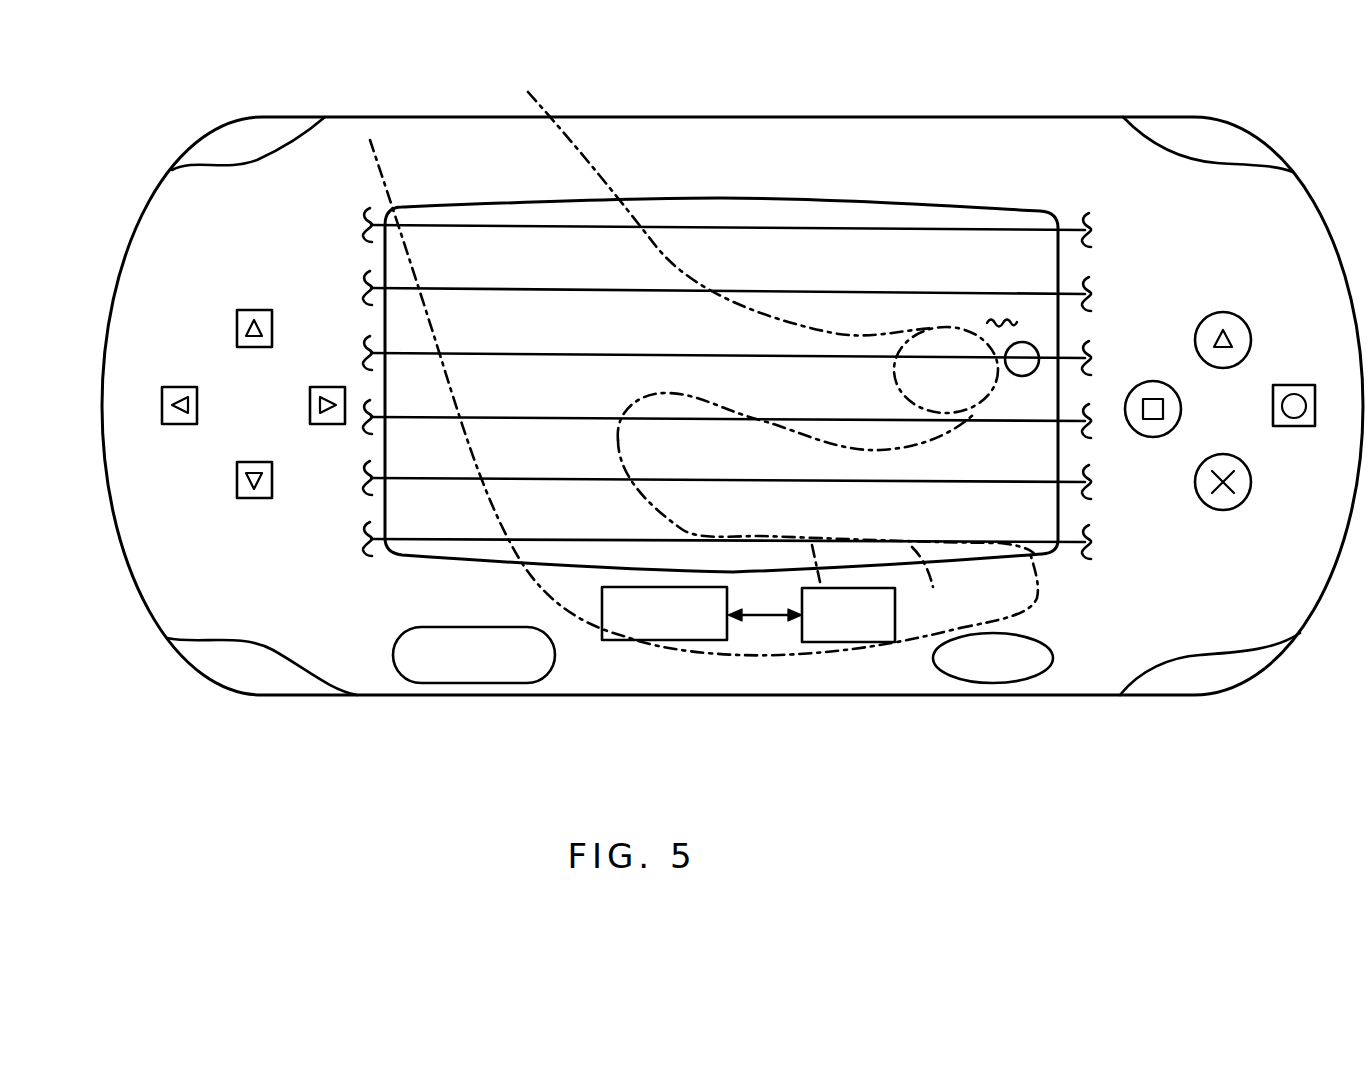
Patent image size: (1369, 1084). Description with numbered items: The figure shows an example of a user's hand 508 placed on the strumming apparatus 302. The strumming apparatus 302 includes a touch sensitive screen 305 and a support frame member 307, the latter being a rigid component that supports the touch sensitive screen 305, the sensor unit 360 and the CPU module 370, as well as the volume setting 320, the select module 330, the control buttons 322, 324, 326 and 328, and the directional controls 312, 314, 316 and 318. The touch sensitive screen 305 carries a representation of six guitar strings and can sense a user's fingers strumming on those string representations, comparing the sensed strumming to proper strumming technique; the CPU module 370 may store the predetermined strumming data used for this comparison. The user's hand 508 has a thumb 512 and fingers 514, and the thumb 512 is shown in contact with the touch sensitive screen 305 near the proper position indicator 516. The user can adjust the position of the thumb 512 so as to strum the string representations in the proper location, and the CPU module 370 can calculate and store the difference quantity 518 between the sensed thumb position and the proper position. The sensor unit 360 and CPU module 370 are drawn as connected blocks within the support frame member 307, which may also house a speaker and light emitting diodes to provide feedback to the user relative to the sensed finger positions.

The strumming apparatus 302 is at (985, 30).
The touch sensitive screen 305 is at (788, 192).
The support frame member 307 is at (878, 704).
The directional control 312 is at (250, 310).
The directional control 314 is at (177, 387).
The directional control 316 is at (330, 387).
The directional control 318 is at (237, 478).
The volume setting 320 is at (517, 683).
The control button 322 is at (1212, 313).
The control button 324 is at (1150, 438).
The control button 326 is at (1285, 385).
The control button 328 is at (1224, 510).
The select module 330 is at (1023, 683).
The sensor unit 360 is at (660, 641).
The CPU module 370 is at (840, 642).
The user's hand 508 is at (607, 180).
The thumb 512 is at (900, 450).
The fingers 514 is at (1037, 600).
The proper position indicator 516 is at (1034, 343).
The difference quantity 518 is at (1000, 313).